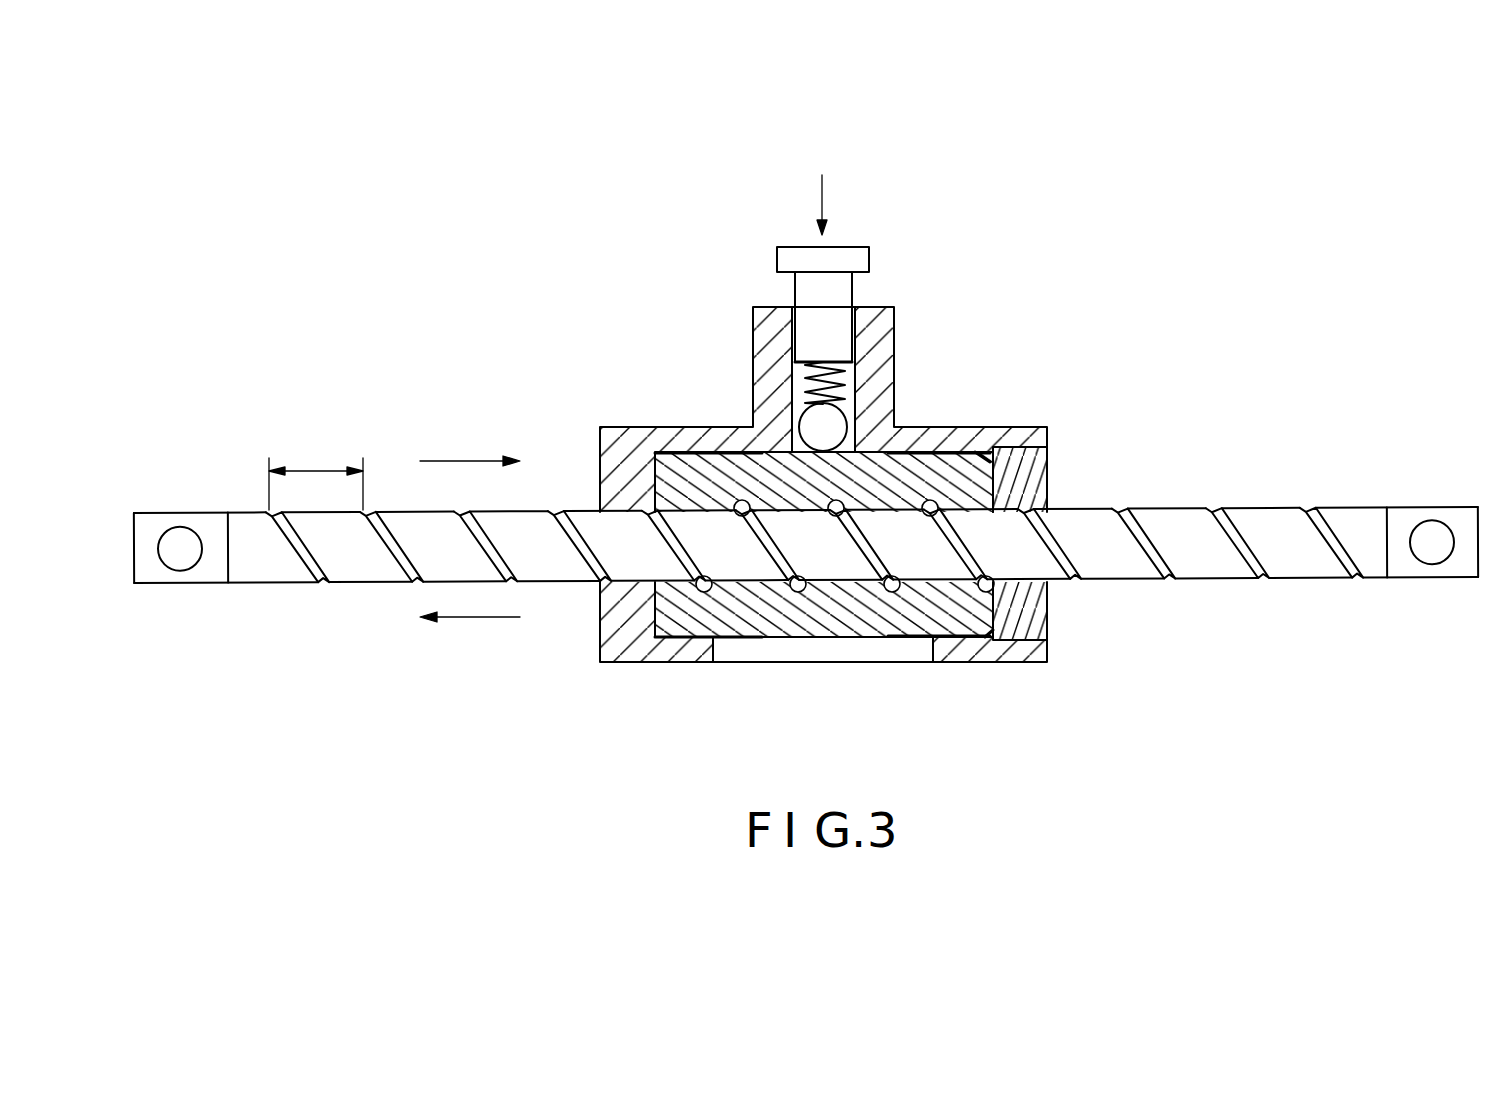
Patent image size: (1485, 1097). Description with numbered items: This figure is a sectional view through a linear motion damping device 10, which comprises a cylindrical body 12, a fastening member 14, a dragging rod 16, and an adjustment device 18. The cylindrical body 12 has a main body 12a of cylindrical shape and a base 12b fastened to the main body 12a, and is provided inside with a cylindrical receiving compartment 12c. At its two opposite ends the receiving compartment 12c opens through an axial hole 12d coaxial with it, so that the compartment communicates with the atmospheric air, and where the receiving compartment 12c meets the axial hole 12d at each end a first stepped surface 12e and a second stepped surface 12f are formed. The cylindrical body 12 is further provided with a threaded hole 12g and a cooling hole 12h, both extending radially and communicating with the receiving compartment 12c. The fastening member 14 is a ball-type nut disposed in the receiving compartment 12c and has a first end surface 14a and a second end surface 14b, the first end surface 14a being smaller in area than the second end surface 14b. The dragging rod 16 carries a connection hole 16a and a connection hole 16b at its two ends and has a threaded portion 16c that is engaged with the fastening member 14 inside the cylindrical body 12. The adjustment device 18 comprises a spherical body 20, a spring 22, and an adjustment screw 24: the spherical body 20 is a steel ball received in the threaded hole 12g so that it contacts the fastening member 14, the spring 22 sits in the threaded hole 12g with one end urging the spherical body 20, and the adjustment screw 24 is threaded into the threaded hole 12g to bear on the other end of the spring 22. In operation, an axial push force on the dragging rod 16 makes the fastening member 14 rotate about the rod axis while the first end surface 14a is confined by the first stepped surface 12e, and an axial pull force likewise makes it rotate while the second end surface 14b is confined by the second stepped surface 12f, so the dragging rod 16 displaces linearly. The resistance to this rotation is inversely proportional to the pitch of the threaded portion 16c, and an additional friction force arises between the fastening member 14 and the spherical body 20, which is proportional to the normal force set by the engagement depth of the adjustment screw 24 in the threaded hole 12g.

The linear motion damping device 10 is at (805, 412).
The cylindrical body 12 is at (843, 534).
The main body 12a is at (955, 650).
The base 12b is at (1048, 613).
The receiving compartment 12c is at (987, 457).
The axial hole 12d is at (608, 600).
The first stepped surface 12e is at (986, 637).
The second stepped surface 12f is at (652, 612).
The threaded hole 12g is at (843, 404).
The cooling hole 12h is at (849, 652).
The fastening member 14 is at (893, 563).
The first end surface 14a is at (997, 478).
The second end surface 14b is at (888, 612).
The dragging rod 16 is at (805, 531).
The connection hole 16a is at (1427, 560).
The connection hole 16b is at (182, 565).
The threaded portion 16c is at (1260, 567).
The adjustment device 18 is at (737, 341).
The spherical body 20 is at (817, 432).
The spring 22 is at (800, 378).
The adjustment screw 24 is at (807, 290).